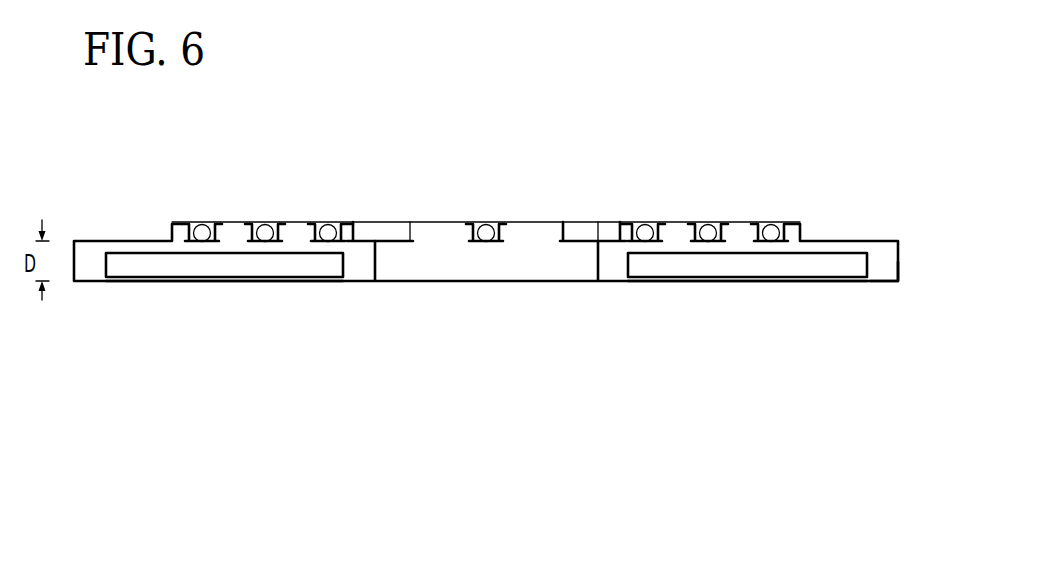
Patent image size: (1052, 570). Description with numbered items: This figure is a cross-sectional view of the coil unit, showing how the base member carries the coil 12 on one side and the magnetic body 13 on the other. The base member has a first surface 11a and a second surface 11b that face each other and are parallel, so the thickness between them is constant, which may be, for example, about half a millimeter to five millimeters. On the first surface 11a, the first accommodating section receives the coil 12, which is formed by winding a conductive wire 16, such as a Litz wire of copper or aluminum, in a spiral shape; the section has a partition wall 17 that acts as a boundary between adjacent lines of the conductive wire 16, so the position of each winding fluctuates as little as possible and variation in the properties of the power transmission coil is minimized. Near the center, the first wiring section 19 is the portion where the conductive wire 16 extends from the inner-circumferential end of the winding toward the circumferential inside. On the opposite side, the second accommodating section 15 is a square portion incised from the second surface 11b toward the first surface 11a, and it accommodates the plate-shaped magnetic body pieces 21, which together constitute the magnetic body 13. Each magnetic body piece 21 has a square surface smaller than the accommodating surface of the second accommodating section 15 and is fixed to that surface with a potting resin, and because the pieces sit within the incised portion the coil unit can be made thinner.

The first surface 11a is at (889, 241).
The second surface 11b is at (887, 283).
The coil 12 is at (747, 223).
The magnetic body 13 is at (747, 265).
The second accommodating section 15 is at (740, 294).
The conductive wire 16 is at (325, 223).
The partition wall 17 is at (742, 223).
The first wiring section 19 is at (488, 225).
The magnetic body piece 21 is at (652, 262).